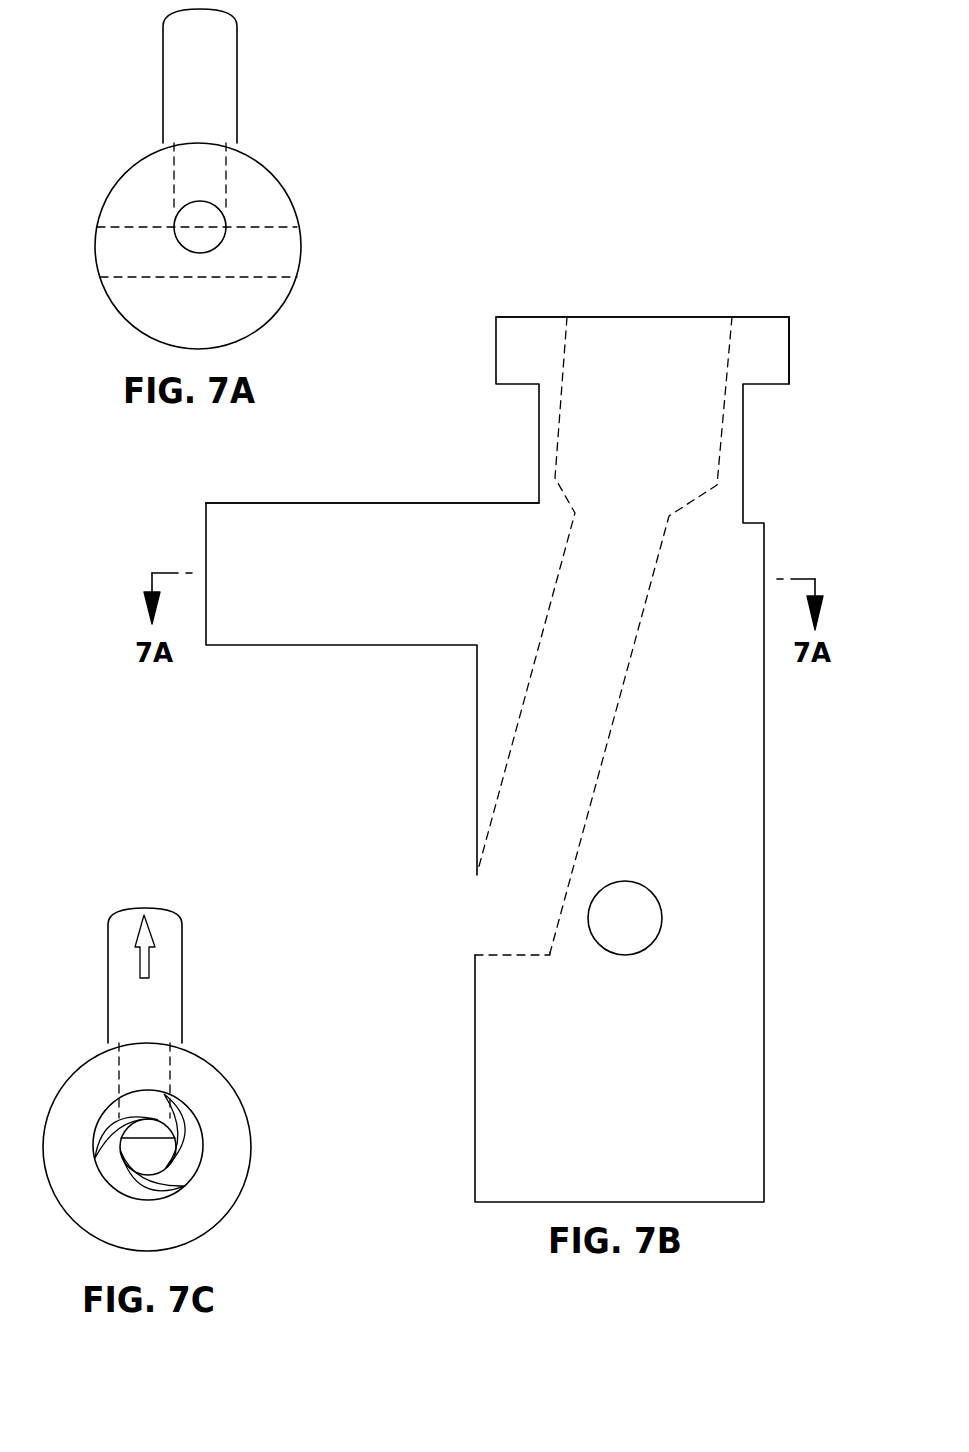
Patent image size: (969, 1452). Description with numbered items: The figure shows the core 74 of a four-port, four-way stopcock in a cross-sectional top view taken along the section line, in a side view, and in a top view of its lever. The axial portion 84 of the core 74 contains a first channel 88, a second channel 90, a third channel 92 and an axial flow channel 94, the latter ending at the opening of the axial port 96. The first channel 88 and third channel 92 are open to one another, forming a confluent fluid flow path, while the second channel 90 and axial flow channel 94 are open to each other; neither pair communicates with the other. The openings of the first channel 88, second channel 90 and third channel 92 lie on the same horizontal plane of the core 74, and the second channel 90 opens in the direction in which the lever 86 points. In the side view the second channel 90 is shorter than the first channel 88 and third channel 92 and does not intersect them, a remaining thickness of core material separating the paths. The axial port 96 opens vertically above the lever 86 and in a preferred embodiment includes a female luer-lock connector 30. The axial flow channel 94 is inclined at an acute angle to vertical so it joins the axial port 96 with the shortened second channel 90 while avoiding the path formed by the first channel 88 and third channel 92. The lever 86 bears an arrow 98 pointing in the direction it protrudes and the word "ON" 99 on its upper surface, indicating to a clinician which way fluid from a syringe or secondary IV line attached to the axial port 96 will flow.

In FIG. 7B, the female luer-lock connector 30 is at (789, 343).
In FIG. 7A, the core 74 is at (255, 90).
In FIG. 7B, the core 74 is at (522, 300).
In FIG. 7A, the axial portion 84 is at (128, 168).
In FIG. 7B, the axial portion 84 is at (477, 717).
In FIG. 7A, the lever 86 is at (163, 62).
In FIG. 7B, the lever 86 is at (388, 502).
In FIG. 7C, the lever 86 is at (108, 975).
In FIG. 7A, the first channel 88 is at (286, 268).
In FIG. 7B, the first channel 88 is at (719, 934).
In FIG. 7A, the second channel 90 is at (211, 185).
In FIG. 7B, the second channel 90 is at (523, 949).
In FIG. 7A, the third channel 92 is at (131, 268).
In FIG. 7B, the third channel 92 is at (648, 910).
In FIG. 7A, the axial flow channel 94 is at (175, 238).
In FIG. 7B, the axial flow channel 94 is at (615, 579).
In FIG. 7B, the axial port 96 is at (675, 317).
In FIG. 7C, the arrow 98 is at (152, 943).
In FIG. 7C, the word "ON" 99 is at (148, 1005).